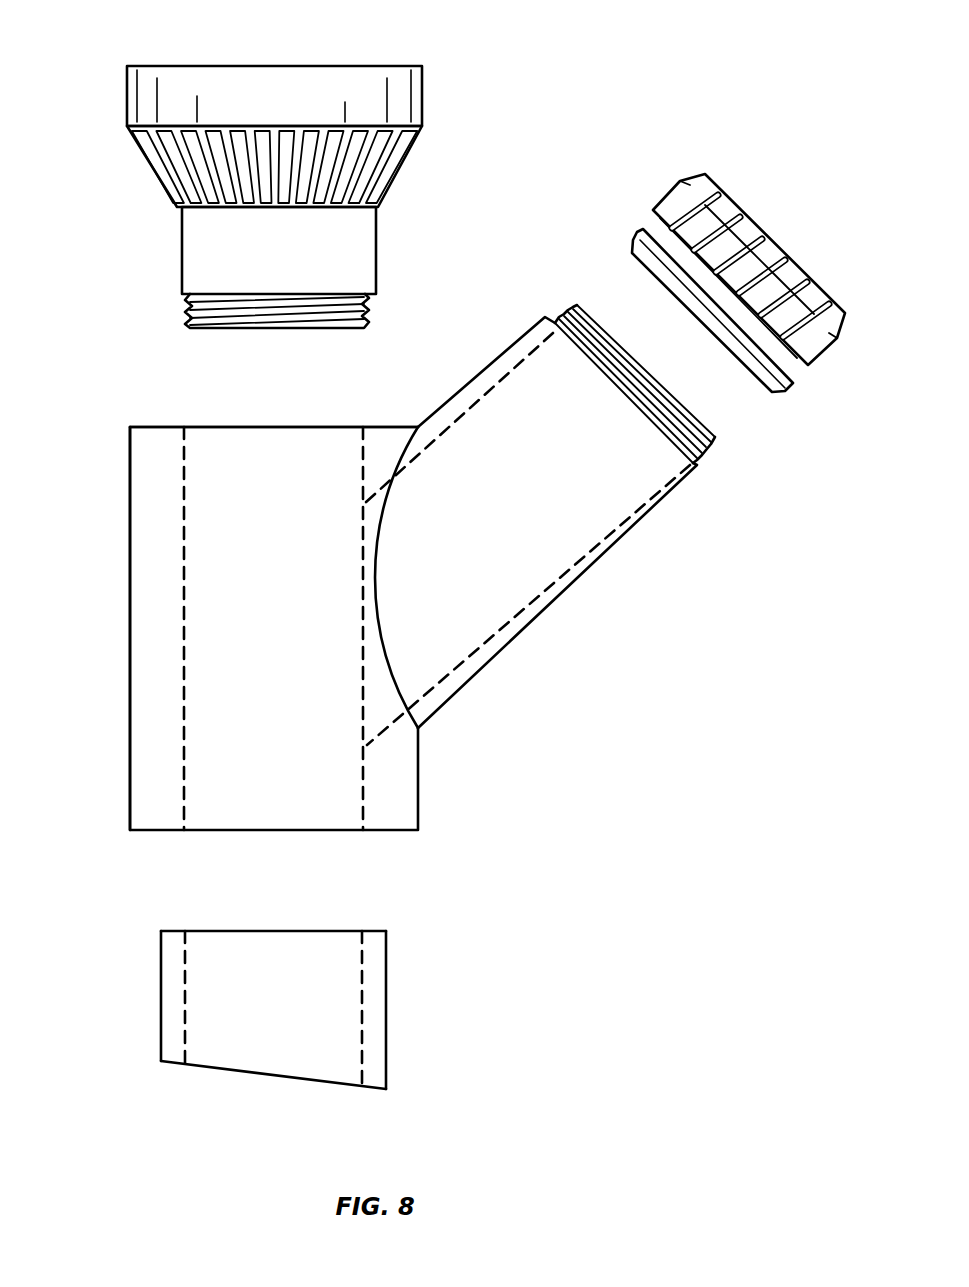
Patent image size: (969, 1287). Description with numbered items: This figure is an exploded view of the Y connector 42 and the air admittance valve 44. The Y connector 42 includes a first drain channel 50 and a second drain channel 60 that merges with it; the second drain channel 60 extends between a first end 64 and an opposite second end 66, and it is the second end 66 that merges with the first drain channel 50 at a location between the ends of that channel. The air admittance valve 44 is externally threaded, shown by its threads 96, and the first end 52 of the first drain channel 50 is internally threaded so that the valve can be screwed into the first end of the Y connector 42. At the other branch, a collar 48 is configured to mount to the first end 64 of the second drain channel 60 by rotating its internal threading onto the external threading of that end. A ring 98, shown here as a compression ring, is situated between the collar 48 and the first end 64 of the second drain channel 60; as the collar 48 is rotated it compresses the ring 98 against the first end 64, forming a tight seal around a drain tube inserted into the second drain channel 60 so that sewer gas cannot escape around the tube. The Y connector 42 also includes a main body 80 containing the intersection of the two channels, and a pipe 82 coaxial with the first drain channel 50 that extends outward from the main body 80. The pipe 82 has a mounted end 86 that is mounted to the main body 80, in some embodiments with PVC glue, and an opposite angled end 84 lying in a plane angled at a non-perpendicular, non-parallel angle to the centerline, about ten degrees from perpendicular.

The Y connector 42 is at (366, 567).
The air admittance valve 44 is at (165, 66).
The collar 48 is at (690, 215).
The first drain channel 50 is at (274, 628).
The first end 52 is at (226, 425).
The second drain channel 60 is at (531, 531).
The first end 64 is at (640, 362).
The second end 66 is at (370, 535).
The main body 80 is at (145, 688).
The pipe 82 is at (239, 1004).
The angled end 84 is at (285, 1078).
The mounted end 86 is at (282, 931).
The threads 96 is at (176, 312).
The ring 98 is at (640, 240).